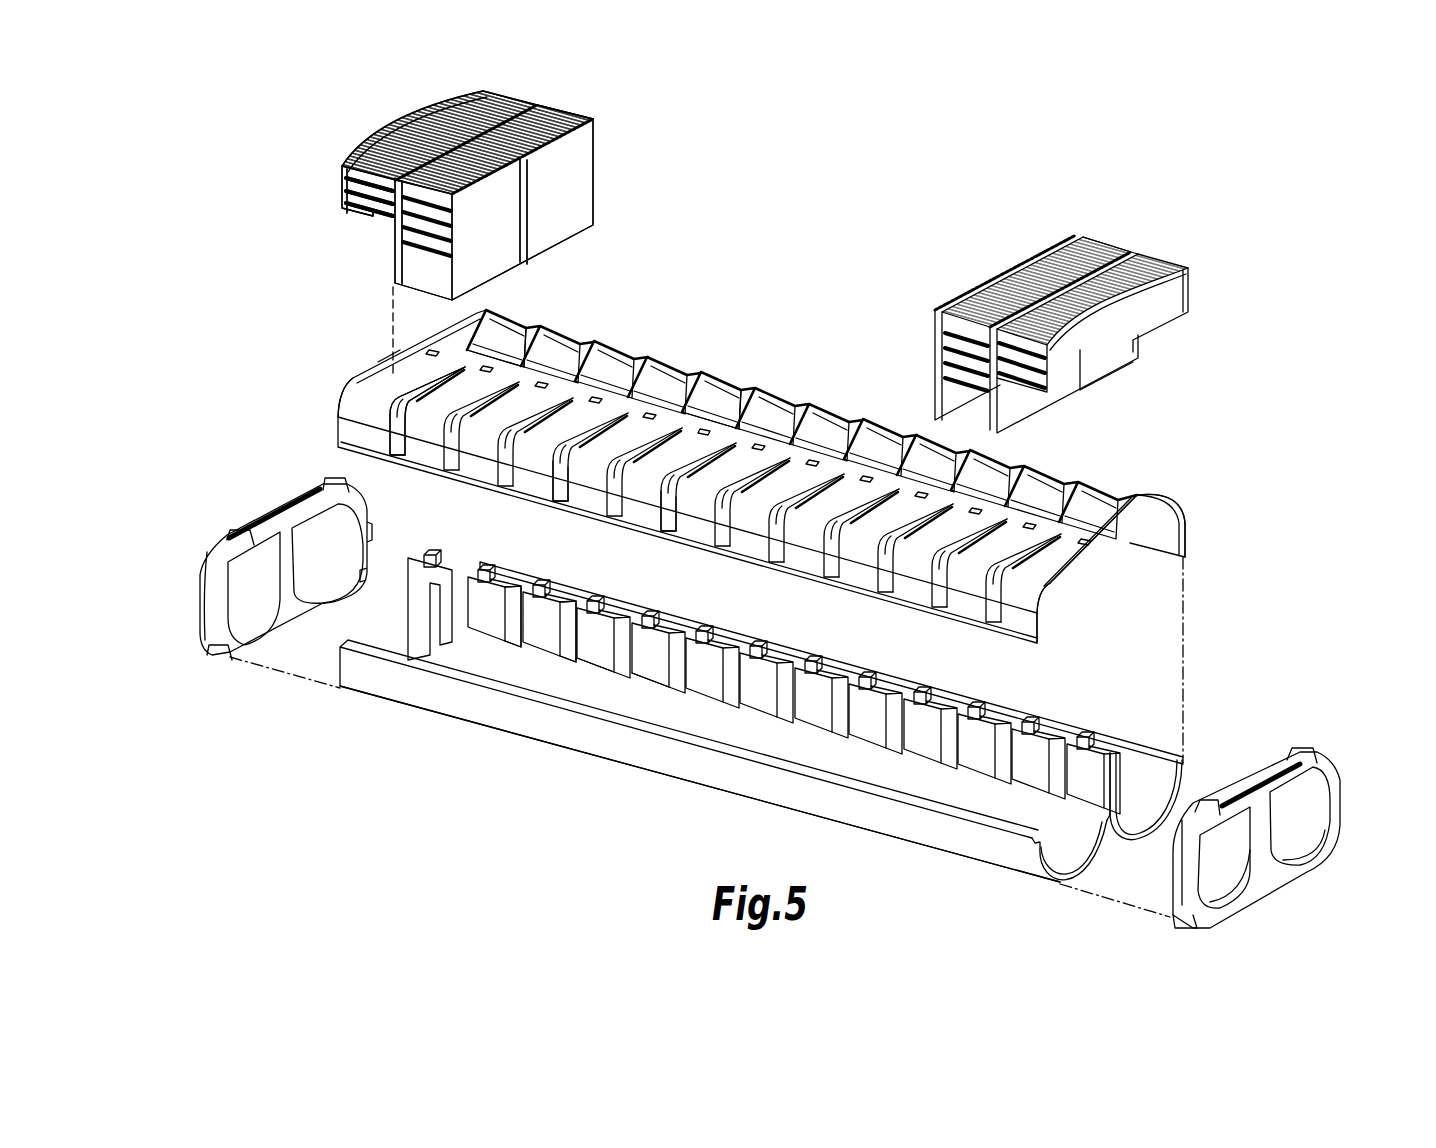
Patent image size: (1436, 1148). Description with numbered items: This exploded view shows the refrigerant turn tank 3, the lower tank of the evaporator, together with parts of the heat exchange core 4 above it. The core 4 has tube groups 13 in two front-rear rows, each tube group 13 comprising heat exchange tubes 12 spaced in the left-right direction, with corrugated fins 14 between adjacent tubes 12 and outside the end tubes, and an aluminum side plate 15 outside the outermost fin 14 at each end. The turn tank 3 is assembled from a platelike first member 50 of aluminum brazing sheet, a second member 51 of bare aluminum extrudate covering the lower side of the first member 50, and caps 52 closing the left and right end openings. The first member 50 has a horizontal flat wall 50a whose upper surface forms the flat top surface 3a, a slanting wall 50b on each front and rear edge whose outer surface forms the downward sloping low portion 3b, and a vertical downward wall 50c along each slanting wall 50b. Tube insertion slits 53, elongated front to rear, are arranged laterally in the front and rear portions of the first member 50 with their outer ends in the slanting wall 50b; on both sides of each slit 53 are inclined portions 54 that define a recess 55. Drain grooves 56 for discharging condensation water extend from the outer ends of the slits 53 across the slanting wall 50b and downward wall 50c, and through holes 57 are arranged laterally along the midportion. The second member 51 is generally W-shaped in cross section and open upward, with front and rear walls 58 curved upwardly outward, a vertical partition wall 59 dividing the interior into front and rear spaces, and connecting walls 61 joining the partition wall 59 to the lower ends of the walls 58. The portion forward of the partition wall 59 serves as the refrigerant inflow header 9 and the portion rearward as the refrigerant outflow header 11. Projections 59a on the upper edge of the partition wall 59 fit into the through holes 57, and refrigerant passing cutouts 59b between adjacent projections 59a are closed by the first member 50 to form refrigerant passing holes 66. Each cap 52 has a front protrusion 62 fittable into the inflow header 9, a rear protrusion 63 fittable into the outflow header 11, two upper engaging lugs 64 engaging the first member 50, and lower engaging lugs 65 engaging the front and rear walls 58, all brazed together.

The refrigerant turn tank 3 is at (504, 794).
The horizontal flat surface 3a is at (378, 362).
The low portion 3b is at (350, 398).
The heat exchange core 4 is at (283, 211).
The refrigerant inflow header 9 is at (1138, 775).
The refrigerant outflow header 11 is at (953, 803).
The heat exchange tubes 12 is at (510, 250).
The tube groups 13 is at (353, 158).
The corrugated fins 14 is at (537, 104).
The side plate 15 is at (343, 193).
The first member 50 is at (785, 482).
The horizontal flat wall 50a is at (1080, 552).
The slanting wall 50b is at (1185, 512).
The vertical downward wall 50c is at (1190, 537).
The second member 51 is at (733, 602).
The caps 52 is at (782, 697).
The tube insertion slits 53 is at (877, 450).
The inclined portions 54 is at (412, 390).
The recess 55 is at (386, 388).
The drain grooves 56 is at (548, 497).
The through holes 57 is at (1082, 533).
The front and rear walls 58 is at (1096, 797).
The partition wall 59 is at (730, 656).
The projections 59a is at (483, 557).
The refrigerant passing cutouts 59b is at (570, 657).
The connecting walls 61 is at (1125, 840).
The front laterally inward protrusion 62 is at (360, 522).
The rear laterally inward protrusion 63 is at (263, 633).
The upper engaging lugs 64 is at (240, 532).
The lower engaging lug 65 is at (227, 658).
The refrigerant passing holes 66 is at (677, 680).